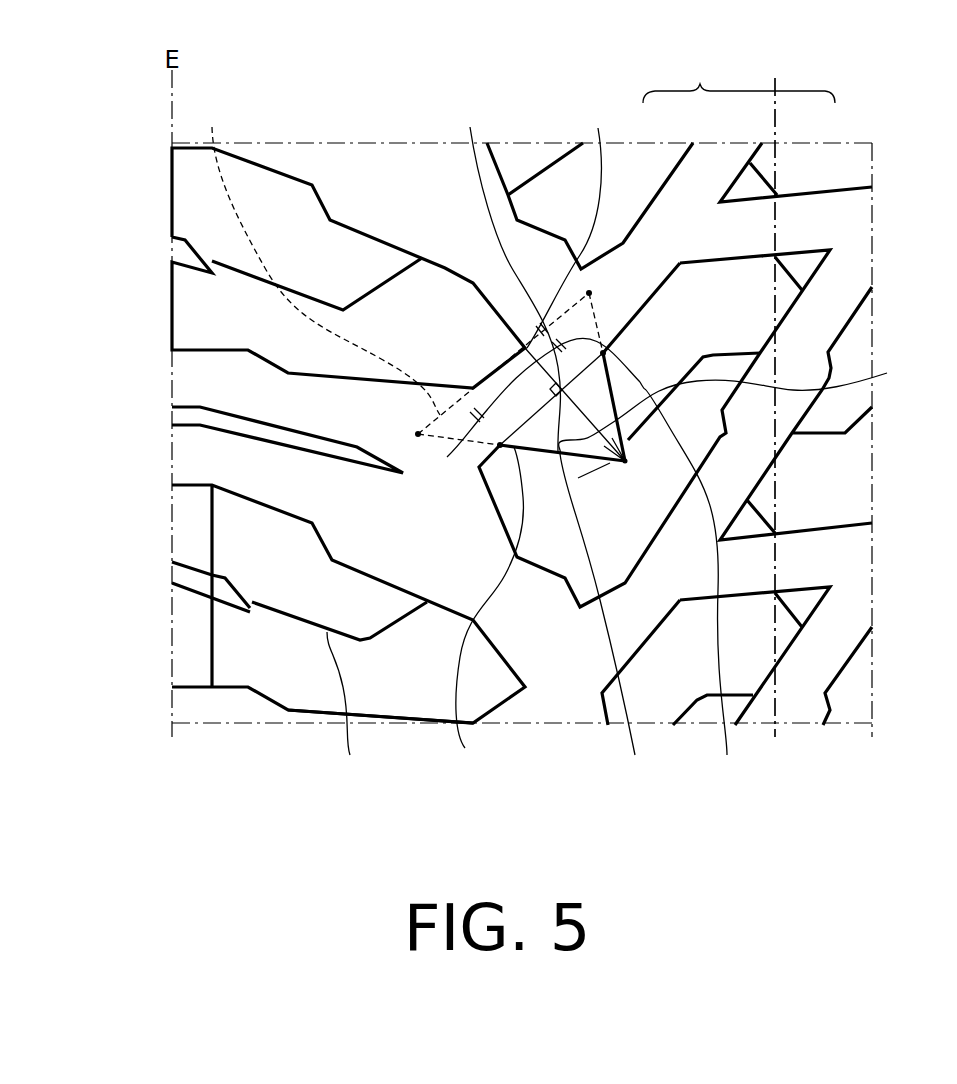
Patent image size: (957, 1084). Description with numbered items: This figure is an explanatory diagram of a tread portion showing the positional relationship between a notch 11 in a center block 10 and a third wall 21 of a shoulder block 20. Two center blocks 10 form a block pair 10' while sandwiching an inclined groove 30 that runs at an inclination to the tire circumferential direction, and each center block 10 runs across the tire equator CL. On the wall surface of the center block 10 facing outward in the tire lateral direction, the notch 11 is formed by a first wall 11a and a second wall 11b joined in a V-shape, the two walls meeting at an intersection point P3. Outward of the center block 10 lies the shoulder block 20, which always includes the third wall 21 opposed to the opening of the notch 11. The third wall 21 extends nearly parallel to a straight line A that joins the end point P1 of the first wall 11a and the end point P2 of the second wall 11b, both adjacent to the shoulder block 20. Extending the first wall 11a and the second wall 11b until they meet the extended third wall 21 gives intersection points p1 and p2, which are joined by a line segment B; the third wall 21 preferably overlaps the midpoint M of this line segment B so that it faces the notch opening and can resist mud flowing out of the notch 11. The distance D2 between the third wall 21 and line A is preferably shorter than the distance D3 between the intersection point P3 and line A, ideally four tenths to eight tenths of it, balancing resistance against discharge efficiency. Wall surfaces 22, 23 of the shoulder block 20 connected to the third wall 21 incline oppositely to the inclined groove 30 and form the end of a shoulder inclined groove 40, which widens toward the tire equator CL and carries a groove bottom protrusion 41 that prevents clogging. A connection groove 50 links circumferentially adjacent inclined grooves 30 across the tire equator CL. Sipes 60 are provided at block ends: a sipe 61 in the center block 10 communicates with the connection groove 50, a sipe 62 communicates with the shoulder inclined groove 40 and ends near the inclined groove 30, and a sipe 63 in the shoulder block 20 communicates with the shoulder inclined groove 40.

The center block 10 is at (679, 188).
The block pair 10' is at (739, 78).
The notch 11 is at (743, 408).
The first wall 11a is at (569, 222).
The second wall 11b is at (499, 274).
The shoulder block 20 is at (288, 190).
The third wall 21 is at (399, 272).
The wall surface 22 is at (505, 660).
The wall surface 23 is at (417, 723).
The inclined groove 30 is at (825, 307).
The shoulder inclined groove 40 is at (182, 456).
The groove bottom protrusion 41 is at (182, 414).
The connection groove 50 is at (835, 578).
The sipe 60 is at (557, 584).
The sipe 61 is at (722, 584).
The sipe 62 is at (625, 620).
The sipe 63 is at (350, 709).
The straight line A is at (489, 611).
The line segment B is at (321, 255).
The tire equator CL is at (777, 390).
The midpoint M is at (503, 363).
The intersection point p1 is at (589, 293).
The intersection point p2 is at (418, 434).
The end point P1 is at (603, 353).
The end point P2 is at (500, 450).
The intersection point P3 is at (625, 463).
The distance D2 is at (521, 412).
The distance D3 is at (576, 473).